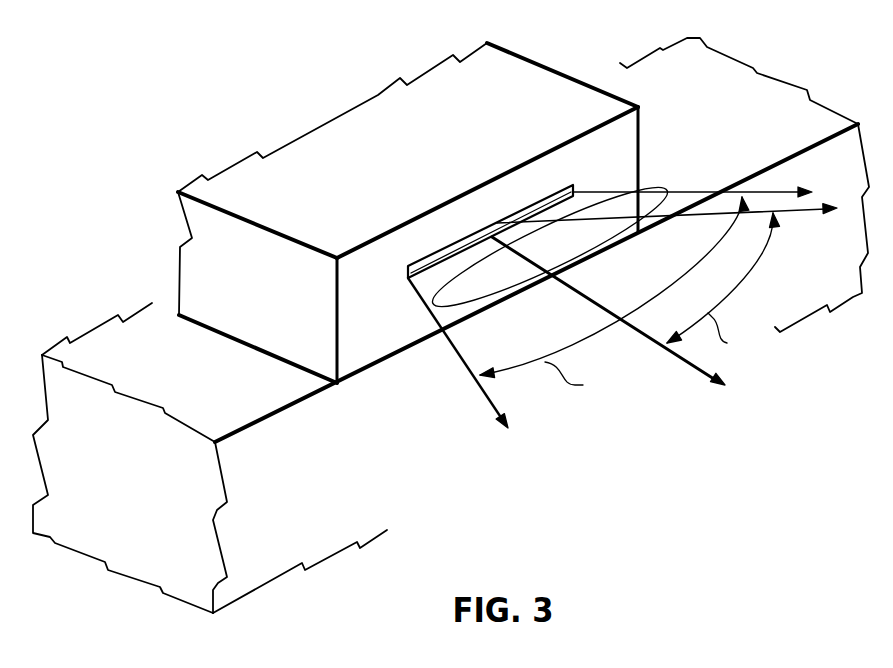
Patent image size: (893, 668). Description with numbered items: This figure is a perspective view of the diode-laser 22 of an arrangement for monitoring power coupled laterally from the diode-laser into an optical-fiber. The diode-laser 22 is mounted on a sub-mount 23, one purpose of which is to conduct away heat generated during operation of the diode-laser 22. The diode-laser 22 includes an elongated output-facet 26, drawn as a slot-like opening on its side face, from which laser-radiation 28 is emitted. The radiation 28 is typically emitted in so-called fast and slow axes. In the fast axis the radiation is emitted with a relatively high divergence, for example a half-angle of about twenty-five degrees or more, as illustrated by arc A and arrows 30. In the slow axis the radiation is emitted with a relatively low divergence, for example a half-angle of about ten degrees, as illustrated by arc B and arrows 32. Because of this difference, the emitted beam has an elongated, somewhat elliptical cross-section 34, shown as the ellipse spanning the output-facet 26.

The diode-laser 22 is at (538, 52).
The sub-mount 23 is at (282, 456).
The output-facet 26 is at (449, 248).
The laser-radiation 28 is at (553, 432).
The arrows 30 is at (800, 213).
The arrows 32 is at (787, 190).
The elliptical cross-section 34 is at (664, 204).